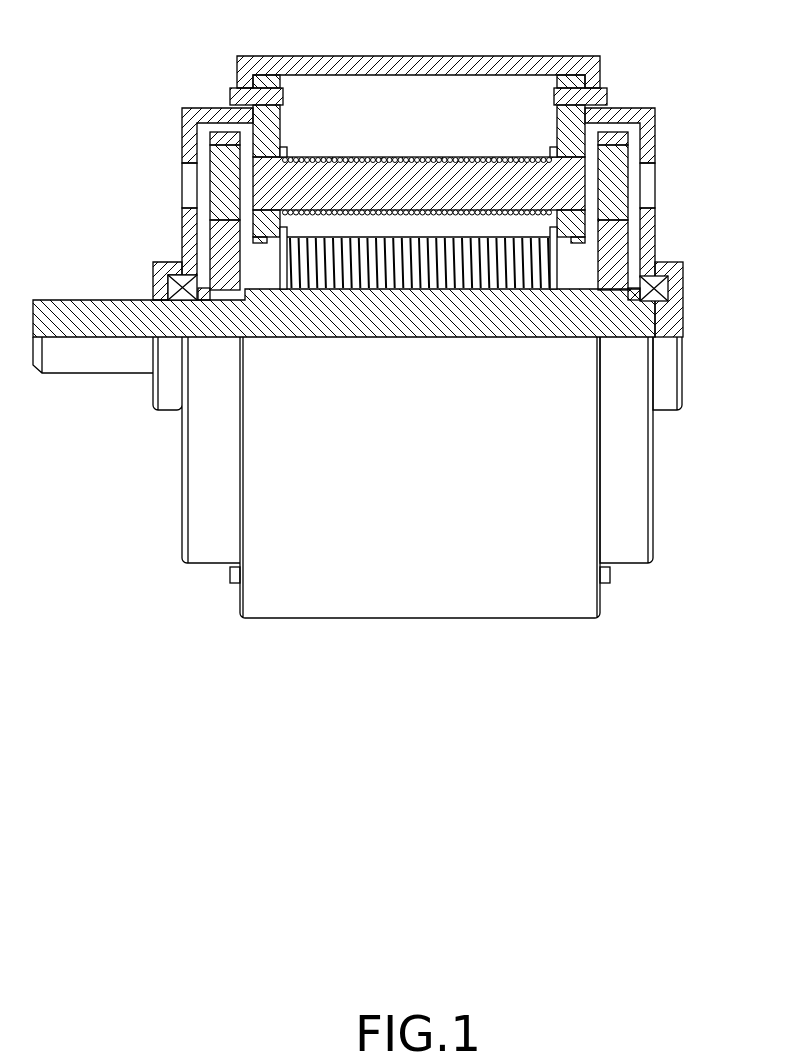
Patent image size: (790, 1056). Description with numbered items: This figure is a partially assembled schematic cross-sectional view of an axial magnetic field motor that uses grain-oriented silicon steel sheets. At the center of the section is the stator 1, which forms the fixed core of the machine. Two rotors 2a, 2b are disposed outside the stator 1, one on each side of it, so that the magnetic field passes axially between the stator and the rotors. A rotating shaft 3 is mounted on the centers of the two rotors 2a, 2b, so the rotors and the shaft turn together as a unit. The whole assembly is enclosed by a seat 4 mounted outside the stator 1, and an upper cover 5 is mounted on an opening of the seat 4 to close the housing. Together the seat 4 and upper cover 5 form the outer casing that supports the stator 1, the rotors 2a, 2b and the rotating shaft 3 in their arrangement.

The stator 1 is at (380, 125).
The rotor 2a is at (627, 245).
The rotor 2b is at (209, 248).
The rotating shaft 3 is at (97, 375).
The seat 4 is at (558, 55).
The upper cover 5 is at (181, 126).